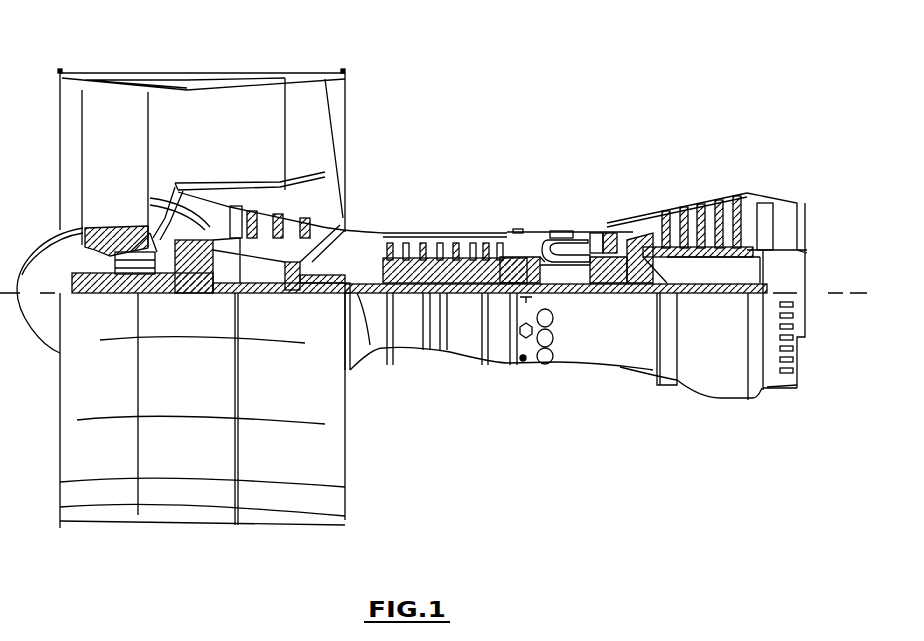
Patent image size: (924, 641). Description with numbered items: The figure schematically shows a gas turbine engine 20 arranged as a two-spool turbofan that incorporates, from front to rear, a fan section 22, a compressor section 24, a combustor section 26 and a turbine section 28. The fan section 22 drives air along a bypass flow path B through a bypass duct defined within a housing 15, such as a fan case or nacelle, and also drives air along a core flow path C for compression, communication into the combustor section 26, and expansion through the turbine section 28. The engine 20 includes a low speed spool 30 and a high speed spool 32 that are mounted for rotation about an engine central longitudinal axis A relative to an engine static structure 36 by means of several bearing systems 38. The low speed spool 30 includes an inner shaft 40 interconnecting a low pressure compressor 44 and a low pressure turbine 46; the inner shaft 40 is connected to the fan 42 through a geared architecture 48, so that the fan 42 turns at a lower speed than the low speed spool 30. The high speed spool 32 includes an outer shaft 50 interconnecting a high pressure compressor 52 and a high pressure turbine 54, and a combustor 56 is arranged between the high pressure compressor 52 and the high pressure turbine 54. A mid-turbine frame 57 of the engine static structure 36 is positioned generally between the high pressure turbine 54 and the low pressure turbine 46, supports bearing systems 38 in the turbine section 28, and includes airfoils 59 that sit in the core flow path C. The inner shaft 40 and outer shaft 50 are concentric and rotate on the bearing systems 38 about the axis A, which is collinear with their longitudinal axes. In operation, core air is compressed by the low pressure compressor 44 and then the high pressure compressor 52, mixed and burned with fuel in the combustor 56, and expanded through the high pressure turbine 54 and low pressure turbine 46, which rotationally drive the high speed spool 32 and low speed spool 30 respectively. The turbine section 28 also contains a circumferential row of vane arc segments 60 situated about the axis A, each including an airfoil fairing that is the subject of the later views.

The housing 15 is at (203, 77).
The gas turbine engine 20 is at (562, 108).
The fan section 22 is at (181, 270).
The compressor section 24 is at (382, 215).
The combustor section 26 is at (566, 225).
The turbine section 28 is at (686, 165).
The low speed spool 30 is at (466, 309).
The high speed spool 32 is at (500, 233).
The engine static structure 36 is at (498, 378).
The bearing systems 38 is at (313, 291).
The inner shaft 40 is at (362, 358).
The fan 42 is at (131, 171).
The low pressure compressor 44 is at (283, 235).
The low pressure turbine 46 is at (707, 193).
The geared architecture 48 is at (207, 291).
The outer shaft 50 is at (566, 297).
The high pressure compressor 52 is at (448, 233).
The high pressure turbine 54 is at (610, 228).
The combustor 56 is at (557, 243).
The mid-turbine frame 57 is at (648, 216).
The airfoils 59 is at (657, 264).
The vane arc segment 60 is at (658, 230).
The engine central longitudinal axis A is at (866, 293).
The bypass flow path B is at (178, 130).
The core flow path C is at (205, 212).